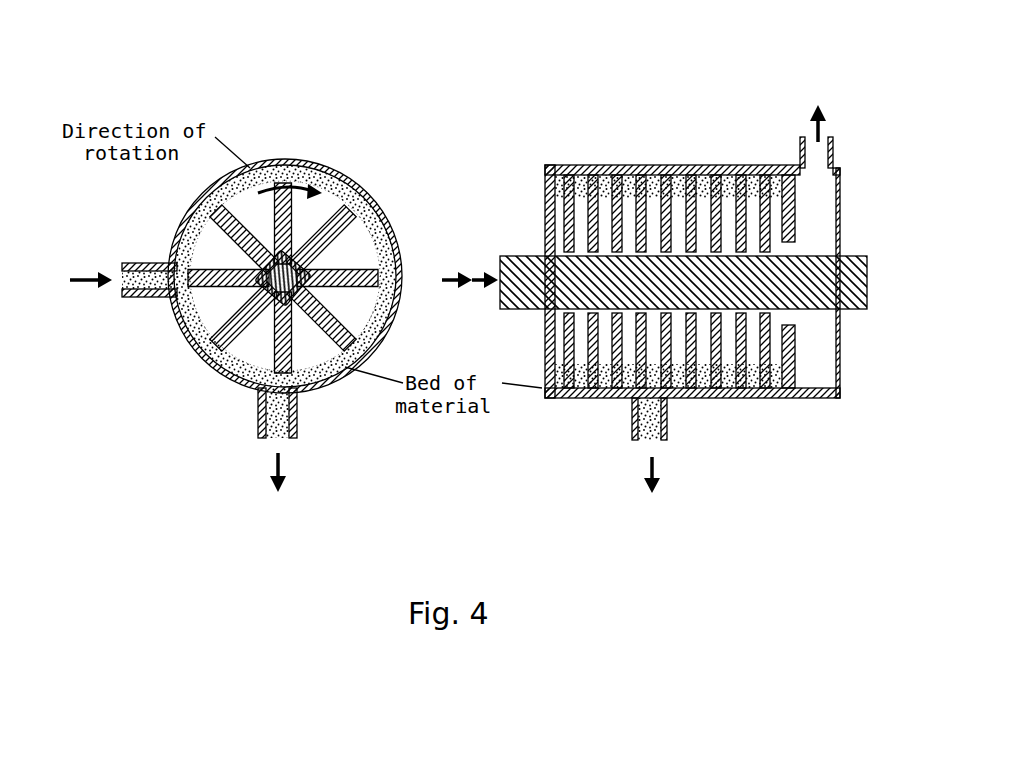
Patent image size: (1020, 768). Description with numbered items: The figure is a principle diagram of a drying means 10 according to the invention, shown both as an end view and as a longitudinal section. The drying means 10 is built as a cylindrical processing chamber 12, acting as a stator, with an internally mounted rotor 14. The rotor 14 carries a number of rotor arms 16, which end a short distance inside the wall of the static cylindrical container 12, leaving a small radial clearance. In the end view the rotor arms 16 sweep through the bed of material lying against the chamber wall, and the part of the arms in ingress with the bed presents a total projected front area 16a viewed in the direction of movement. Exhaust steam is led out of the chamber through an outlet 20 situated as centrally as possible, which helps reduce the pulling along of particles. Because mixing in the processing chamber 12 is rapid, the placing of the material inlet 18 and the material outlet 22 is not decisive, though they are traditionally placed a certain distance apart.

The drying means 10 is at (654, 340).
The cylindrical processing chamber 12 is at (610, 163).
The rotor 14 is at (677, 257).
The rotor arms 16 is at (567, 227).
The total projected front area 16a is at (350, 208).
The material inlet 18 is at (105, 257).
The outlet 20 is at (815, 104).
The outlet 22 is at (686, 445).